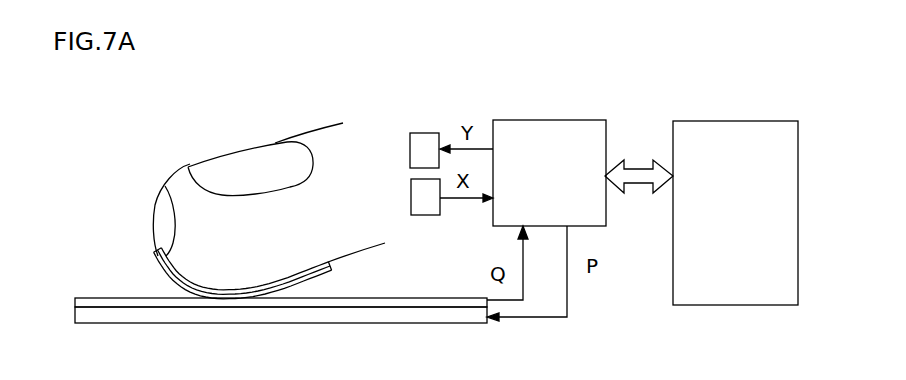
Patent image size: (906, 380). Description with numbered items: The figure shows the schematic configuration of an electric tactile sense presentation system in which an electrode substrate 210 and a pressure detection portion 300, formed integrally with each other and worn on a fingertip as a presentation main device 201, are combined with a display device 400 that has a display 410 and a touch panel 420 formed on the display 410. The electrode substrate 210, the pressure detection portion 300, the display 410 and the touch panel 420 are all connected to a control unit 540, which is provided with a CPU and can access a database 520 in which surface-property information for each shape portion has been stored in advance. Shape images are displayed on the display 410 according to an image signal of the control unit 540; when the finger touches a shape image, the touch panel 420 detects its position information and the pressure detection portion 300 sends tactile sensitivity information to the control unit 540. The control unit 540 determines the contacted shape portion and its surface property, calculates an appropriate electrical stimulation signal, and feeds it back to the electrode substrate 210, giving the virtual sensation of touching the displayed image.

The finger-mounted detection unit 201 is at (85, 142).
The electrode substrate 210 is at (165, 187).
The pressure detection portion 300 is at (158, 253).
The display device 400 is at (408, 326).
The display 410 is at (217, 315).
The touch panel 420 is at (413, 298).
The database 520 is at (733, 121).
The control unit 540 is at (550, 120).